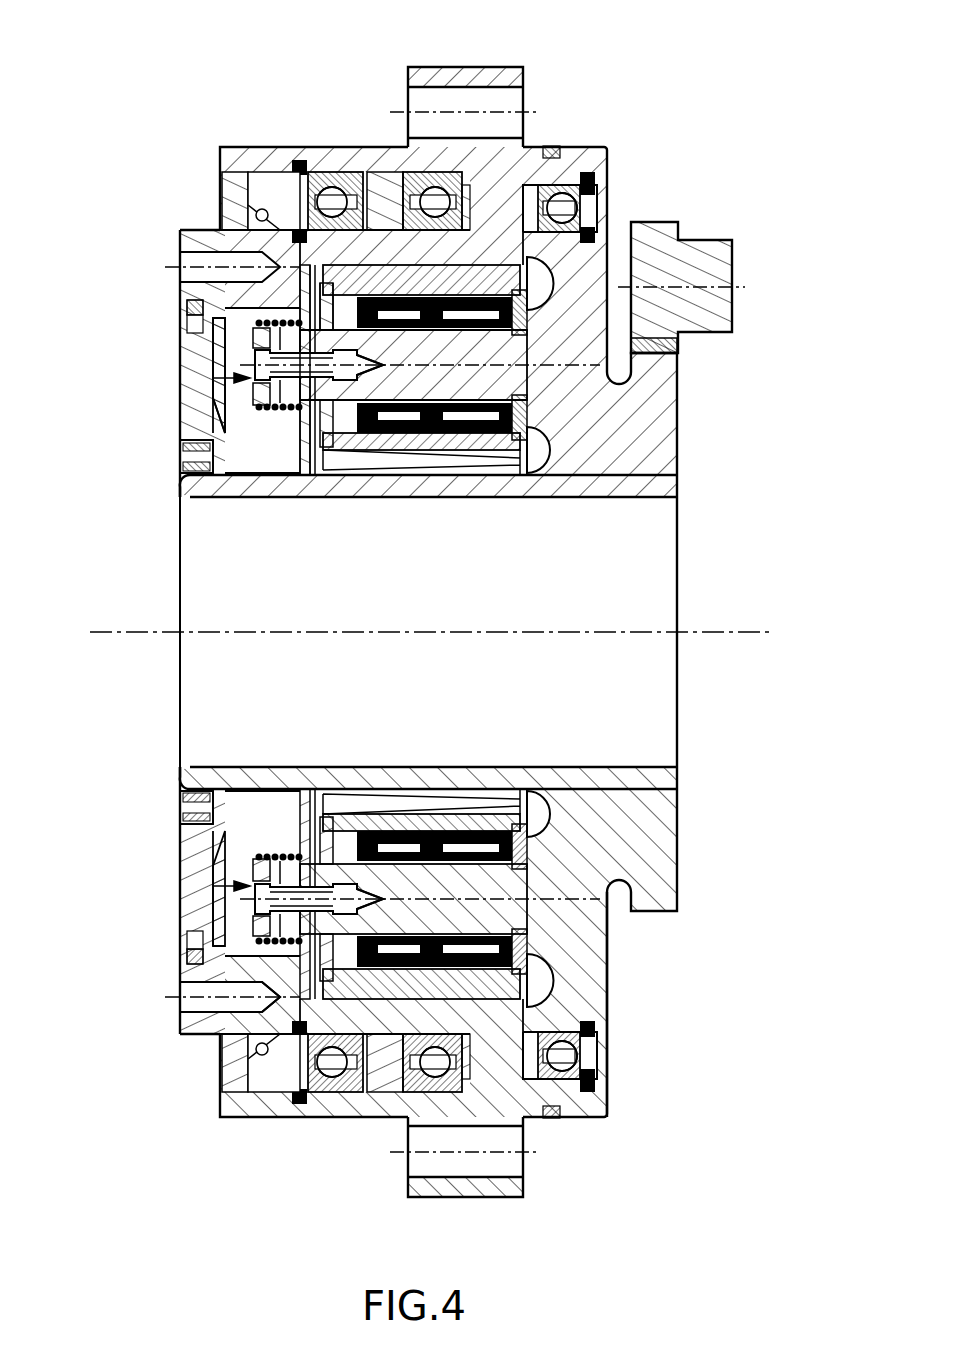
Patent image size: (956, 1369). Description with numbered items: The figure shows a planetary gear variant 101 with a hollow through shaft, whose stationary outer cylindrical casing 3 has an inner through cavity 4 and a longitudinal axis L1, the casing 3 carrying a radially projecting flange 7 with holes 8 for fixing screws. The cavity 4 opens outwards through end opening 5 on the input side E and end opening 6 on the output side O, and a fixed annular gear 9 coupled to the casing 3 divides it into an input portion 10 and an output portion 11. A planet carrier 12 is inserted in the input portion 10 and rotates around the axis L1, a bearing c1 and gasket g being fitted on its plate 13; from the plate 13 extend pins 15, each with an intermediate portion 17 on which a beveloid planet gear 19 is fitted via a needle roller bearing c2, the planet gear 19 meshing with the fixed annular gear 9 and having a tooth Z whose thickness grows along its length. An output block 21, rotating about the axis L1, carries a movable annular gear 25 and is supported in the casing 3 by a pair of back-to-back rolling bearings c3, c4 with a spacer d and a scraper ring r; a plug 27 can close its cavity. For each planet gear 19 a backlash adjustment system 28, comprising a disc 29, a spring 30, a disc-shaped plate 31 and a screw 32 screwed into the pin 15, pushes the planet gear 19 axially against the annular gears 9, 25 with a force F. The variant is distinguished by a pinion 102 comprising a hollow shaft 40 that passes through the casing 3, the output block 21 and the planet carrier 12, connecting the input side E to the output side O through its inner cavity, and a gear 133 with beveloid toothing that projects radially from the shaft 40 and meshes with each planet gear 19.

The outer cylindrical casing 3 is at (290, 135).
The flange 7 is at (455, 68).
The holes 8 is at (500, 95).
The planetary gear variant 101 is at (650, 70).
The planet gear 19 is at (400, 230).
The movable annular gear 25 is at (385, 250).
The fixed annular gear 9 is at (560, 166).
The bearing c1 is at (580, 200).
The gasket g is at (595, 265).
The inner through cavity 4 is at (598, 250).
The output block 21 is at (190, 232).
The intermediate portion 17 is at (212, 295).
The output side O is at (135, 285).
The screw 32 is at (185, 322).
The pressing force F is at (205, 378).
The plug 27 is at (195, 378).
The disc-shaped plate 31 is at (205, 408).
The backlash adjustment system 28 is at (210, 460).
The spring 30 is at (280, 417).
The pinion 102 is at (214, 503).
The disc 29 is at (285, 470).
The gear with beveloid toothing 133 is at (325, 472).
The tooth Z is at (435, 468).
The bearing c2 is at (385, 455).
The hollow shaft 40 is at (553, 498).
The planet carrier 12 is at (690, 380).
The input side E is at (740, 395).
The longitudinal axis L1 is at (715, 628).
The plate 13 is at (650, 828).
The input portion 10 is at (590, 1055).
The end opening 5 is at (603, 1060).
The output portion 11 is at (192, 1005).
The end opening 6 is at (227, 1086).
The scraper ring r is at (245, 1100).
The rolling bearing c3 is at (325, 1095).
The pin 15 is at (392, 1080).
The spacer d is at (380, 1112).
The rolling bearing c4 is at (410, 1090).